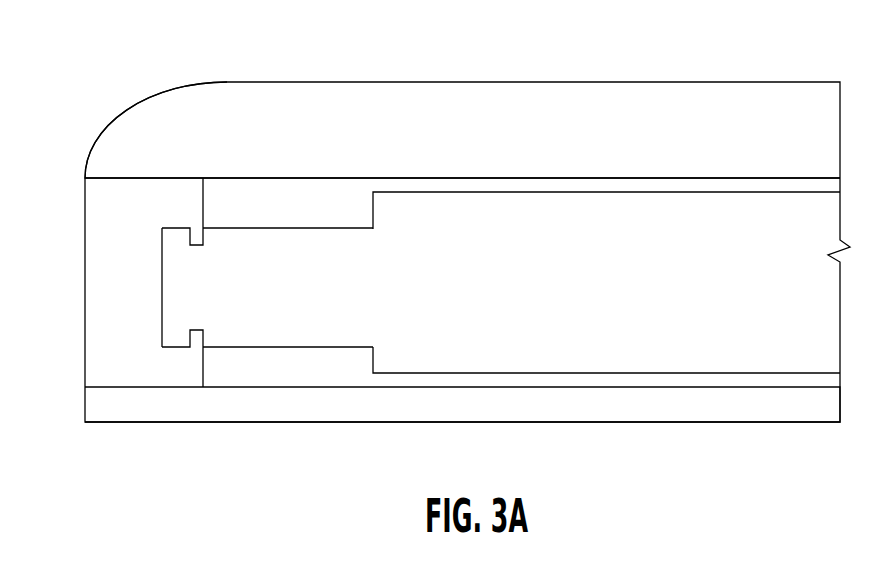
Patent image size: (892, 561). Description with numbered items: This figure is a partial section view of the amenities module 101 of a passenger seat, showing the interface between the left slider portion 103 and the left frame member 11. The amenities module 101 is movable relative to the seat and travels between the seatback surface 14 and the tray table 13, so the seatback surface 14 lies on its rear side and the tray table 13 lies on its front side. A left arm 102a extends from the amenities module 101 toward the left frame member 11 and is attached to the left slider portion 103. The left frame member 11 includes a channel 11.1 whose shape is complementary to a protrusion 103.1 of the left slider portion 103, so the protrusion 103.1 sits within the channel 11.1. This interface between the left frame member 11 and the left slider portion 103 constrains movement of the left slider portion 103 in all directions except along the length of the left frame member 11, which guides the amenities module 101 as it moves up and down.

The left frame member 11 is at (112, 318).
The channel 11.1 is at (162, 255).
The tray table 13 is at (258, 117).
The seatback surface 14 is at (757, 403).
The amenities module 101 is at (640, 244).
The left arm 102a is at (310, 298).
The left slider portion 103 is at (180, 335).
The protrusion 103.1 is at (172, 298).